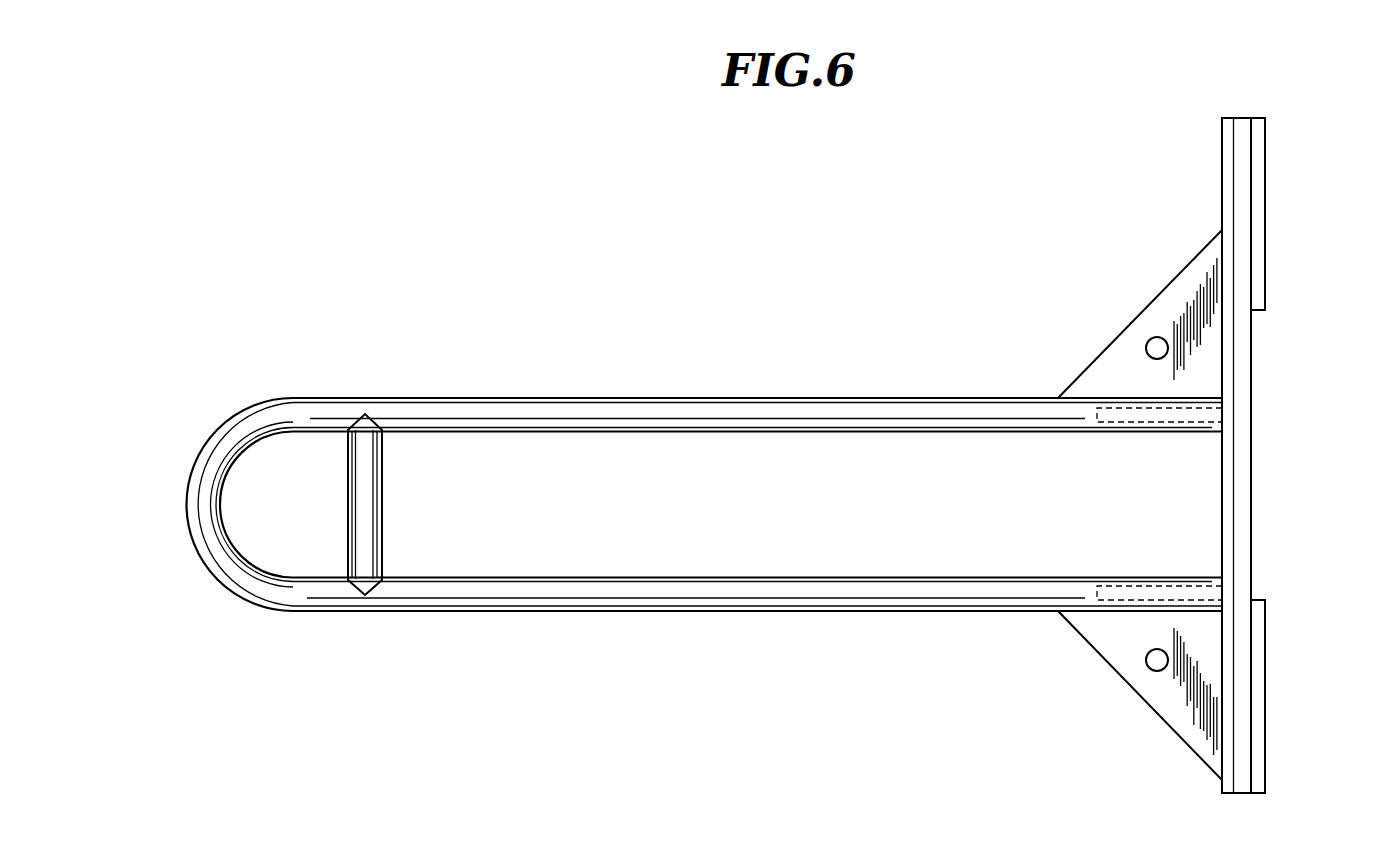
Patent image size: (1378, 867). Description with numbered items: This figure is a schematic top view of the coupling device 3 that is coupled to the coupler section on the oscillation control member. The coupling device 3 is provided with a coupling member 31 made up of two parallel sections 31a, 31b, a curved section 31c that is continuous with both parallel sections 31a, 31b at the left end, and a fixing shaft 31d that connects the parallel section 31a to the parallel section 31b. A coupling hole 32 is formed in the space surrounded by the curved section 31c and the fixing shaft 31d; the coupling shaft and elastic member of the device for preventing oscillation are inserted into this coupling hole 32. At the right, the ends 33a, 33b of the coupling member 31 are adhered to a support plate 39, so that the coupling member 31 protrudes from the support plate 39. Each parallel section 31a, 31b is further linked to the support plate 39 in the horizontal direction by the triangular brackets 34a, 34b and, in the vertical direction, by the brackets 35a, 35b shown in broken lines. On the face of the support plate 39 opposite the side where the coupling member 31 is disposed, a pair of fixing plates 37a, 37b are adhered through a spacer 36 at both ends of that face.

The coupling device 3 is at (657, 366).
The coupling member 31 is at (744, 386).
The parallel section 31a is at (798, 408).
The parallel section 31b is at (574, 594).
The curved section 31c is at (211, 548).
The fixing shaft 31d is at (378, 520).
The coupling hole 32 is at (294, 452).
The end of coupling member 33a is at (1222, 415).
The end of coupling member 33b is at (1222, 600).
The bracket 34a is at (1172, 313).
The bracket 34b is at (1168, 700).
The bracket 35a is at (1120, 398).
The bracket 35b is at (1120, 610).
The spacer 36 is at (1243, 118).
The fixing plate 37a is at (1267, 158).
The fixing plate 37b is at (1267, 673).
The support plate 39 is at (1222, 178).